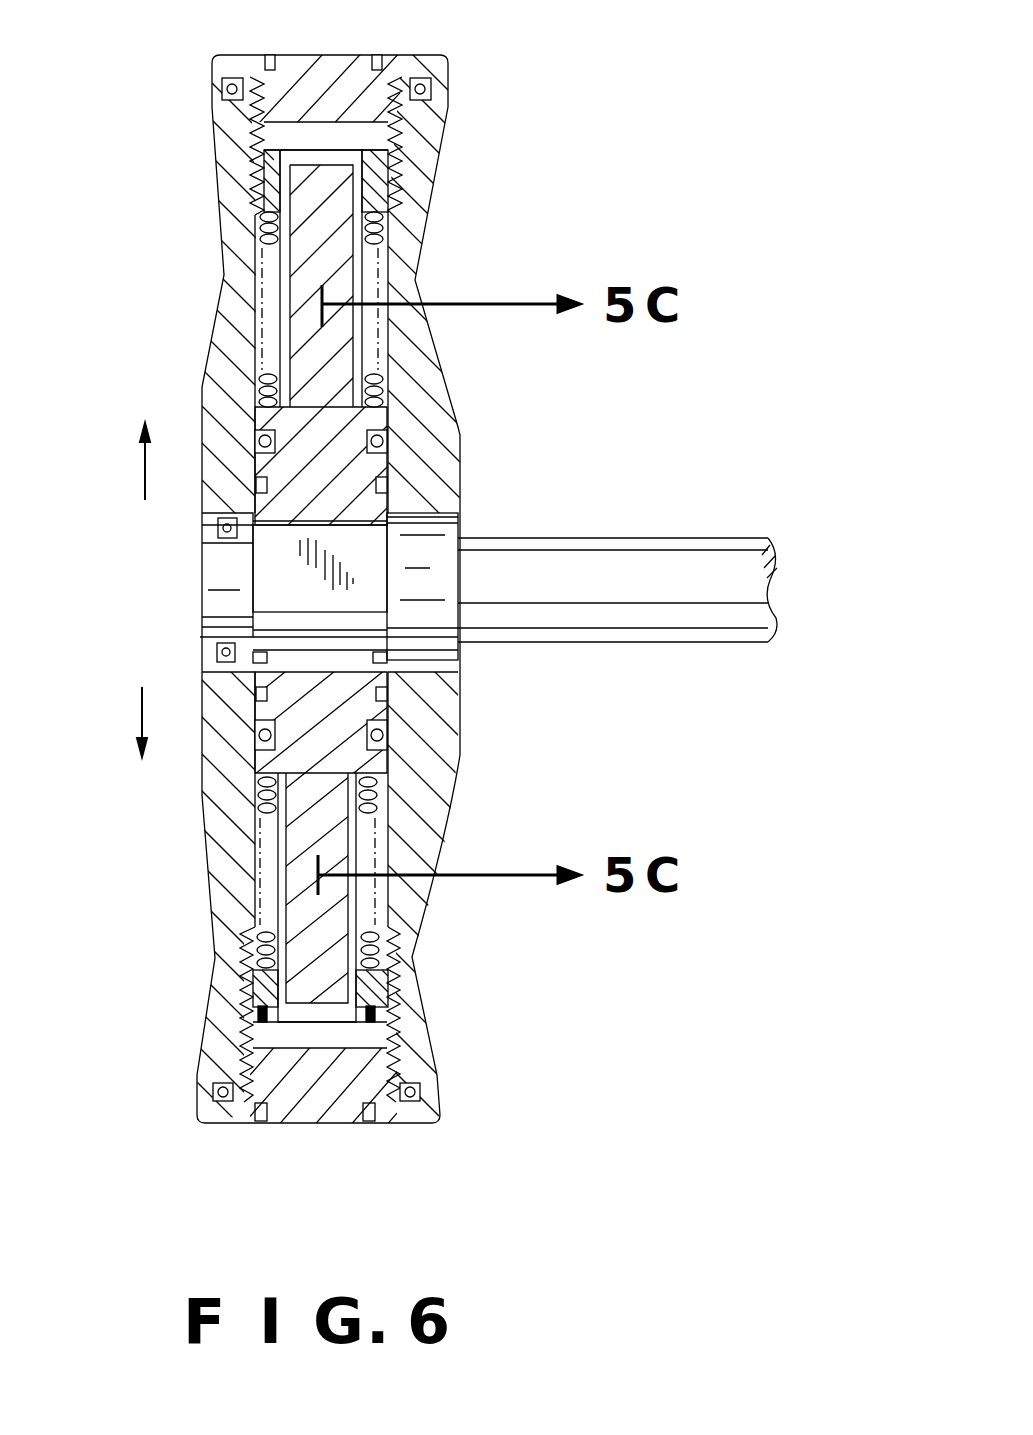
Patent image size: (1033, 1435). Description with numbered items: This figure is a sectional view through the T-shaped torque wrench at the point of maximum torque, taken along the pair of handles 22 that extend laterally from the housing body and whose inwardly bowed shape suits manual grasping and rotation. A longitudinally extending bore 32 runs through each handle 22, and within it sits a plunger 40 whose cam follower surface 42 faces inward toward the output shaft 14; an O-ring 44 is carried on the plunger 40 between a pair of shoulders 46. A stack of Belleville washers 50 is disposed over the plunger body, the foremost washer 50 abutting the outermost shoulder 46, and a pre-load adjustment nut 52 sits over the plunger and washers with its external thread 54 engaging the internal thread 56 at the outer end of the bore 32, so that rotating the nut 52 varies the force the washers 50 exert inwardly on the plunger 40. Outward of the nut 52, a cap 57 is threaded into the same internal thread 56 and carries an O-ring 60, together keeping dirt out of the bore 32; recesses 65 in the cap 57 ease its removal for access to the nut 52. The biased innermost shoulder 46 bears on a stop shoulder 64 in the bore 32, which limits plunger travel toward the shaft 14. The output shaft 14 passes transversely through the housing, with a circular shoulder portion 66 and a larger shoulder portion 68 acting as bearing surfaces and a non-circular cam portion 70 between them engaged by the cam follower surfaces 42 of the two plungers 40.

The output shaft 14 is at (615, 535).
The handles 22 is at (228, 238).
The longitudinally extending bore 32 is at (263, 294).
The plunger 40 is at (340, 283).
The cam follower surface 42 is at (338, 520).
The O-ring 44 is at (262, 445).
The shoulders 46 is at (368, 468).
The Belleville washers 50 is at (375, 225).
The pre-load adjustment nut 52 is at (273, 182).
The external thread 54 is at (377, 187).
The internal thread 56 is at (258, 132).
The cap 57 is at (402, 65).
The O-ring 60 is at (222, 88).
The stop shoulder 64 is at (256, 493).
The recesses 65 is at (272, 55).
The shoulder portion 66 is at (218, 558).
The larger shoulder portion 68 is at (427, 640).
The cam portion 70 is at (420, 665).